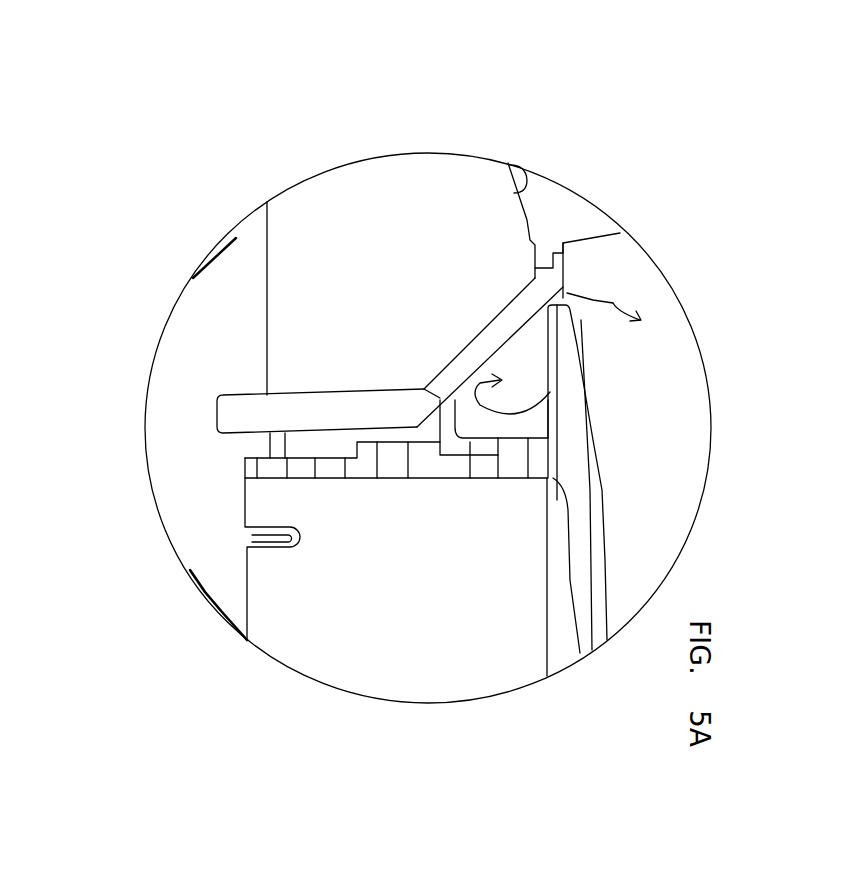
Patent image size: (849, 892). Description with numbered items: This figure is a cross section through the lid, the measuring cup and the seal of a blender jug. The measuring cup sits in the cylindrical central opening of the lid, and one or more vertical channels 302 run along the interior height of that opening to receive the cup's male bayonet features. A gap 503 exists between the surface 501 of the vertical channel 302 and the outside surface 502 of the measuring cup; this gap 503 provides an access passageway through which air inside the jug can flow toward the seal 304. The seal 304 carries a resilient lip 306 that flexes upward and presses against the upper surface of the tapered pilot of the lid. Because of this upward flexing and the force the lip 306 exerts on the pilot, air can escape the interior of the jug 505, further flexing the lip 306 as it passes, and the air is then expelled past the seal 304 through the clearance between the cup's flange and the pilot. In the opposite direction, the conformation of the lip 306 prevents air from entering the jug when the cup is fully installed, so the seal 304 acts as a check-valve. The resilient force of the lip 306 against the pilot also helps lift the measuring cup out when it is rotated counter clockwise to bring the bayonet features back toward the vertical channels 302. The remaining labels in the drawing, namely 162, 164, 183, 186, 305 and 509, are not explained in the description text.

The flange 162 is at (294, 284).
The vertical channel 302 is at (332, 432).
The seal 304 is at (388, 244).
The angled lip 164 is at (436, 251).
The surface of the vertical channel 501 is at (494, 182).
The interior of the jug 505 is at (600, 181).
The gap 503 is at (664, 269).
The clip channel 509 is at (637, 381).
The seal lip 306 is at (630, 427).
The post 186 is at (664, 477).
The base band 305 is at (396, 526).
The outside surface of the measuring cup 502 is at (455, 625).
The hook 183 is at (315, 623).